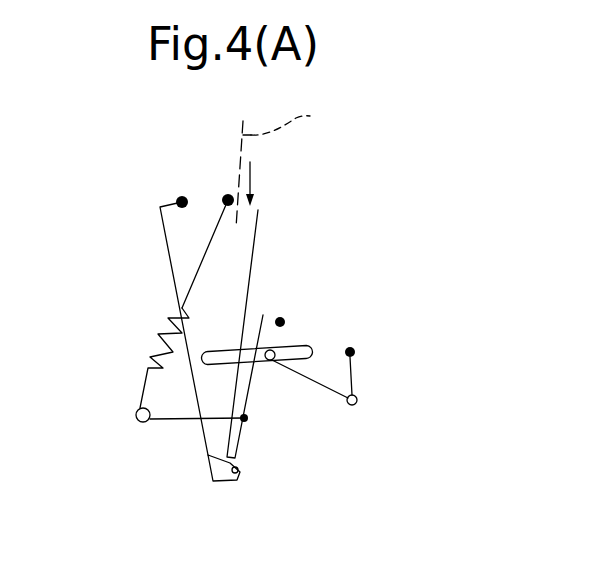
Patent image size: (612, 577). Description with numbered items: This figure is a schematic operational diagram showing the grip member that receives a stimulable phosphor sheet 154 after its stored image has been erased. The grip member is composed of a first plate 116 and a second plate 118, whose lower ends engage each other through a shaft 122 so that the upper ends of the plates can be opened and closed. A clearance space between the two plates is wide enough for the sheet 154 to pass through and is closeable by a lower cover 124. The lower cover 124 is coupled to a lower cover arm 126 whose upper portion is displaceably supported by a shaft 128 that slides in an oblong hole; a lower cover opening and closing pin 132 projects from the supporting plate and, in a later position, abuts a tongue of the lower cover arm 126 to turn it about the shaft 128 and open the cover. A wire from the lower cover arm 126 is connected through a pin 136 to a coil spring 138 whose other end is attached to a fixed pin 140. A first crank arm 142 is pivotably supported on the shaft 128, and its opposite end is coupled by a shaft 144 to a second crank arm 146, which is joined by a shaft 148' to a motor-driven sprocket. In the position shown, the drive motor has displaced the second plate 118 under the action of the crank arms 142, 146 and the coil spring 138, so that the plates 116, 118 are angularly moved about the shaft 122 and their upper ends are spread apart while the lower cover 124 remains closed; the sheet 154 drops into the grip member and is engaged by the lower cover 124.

The first plate 116 is at (160, 223).
The second plate 118 is at (262, 227).
The shaft 122 is at (237, 474).
The lower cover 124 is at (208, 458).
The lower cover arm 126 is at (238, 443).
The shaft 128 is at (290, 347).
The lower cover opening and closing pin 132 is at (281, 319).
The pin 136 is at (134, 418).
The coil spring 138 is at (203, 268).
The pin 140 is at (227, 197).
The first crank arm 142 is at (312, 382).
The shaft 144 is at (356, 404).
The second crank arm 146 is at (353, 375).
The shaft 148' is at (396, 325).
The stimulable phosphor sheet 154 is at (290, 165).